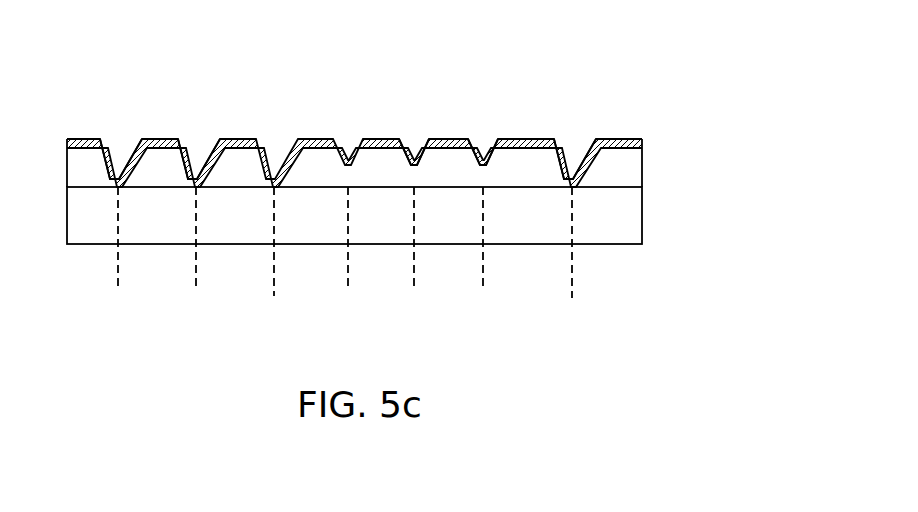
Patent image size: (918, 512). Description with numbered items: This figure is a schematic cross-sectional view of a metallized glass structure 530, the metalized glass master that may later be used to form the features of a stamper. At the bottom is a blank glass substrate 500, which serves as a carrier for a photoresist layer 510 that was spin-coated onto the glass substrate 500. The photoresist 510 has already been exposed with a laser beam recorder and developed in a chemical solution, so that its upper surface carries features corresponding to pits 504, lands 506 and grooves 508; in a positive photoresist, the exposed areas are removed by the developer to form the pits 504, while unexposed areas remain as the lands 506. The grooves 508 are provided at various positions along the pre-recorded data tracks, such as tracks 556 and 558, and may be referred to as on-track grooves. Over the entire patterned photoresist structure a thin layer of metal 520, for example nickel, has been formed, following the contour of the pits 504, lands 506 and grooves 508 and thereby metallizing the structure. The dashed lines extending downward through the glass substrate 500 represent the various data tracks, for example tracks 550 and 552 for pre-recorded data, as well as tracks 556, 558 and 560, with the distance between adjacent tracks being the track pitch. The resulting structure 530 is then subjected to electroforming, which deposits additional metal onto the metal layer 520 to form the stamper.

The glass substrate 500 is at (642, 217).
The photoresist layer 510 is at (642, 165).
The metal layer 520 is at (627, 138).
The pits 504 is at (122, 137).
The lands 506 is at (163, 140).
The grooves 508 is at (413, 137).
The metallized glass structure 530 is at (698, 72).
The data track 550 is at (117, 291).
The data track 552 is at (196, 291).
The data track 556 is at (347, 291).
The data track 558 is at (414, 293).
The groove centerline 560 is at (484, 293).